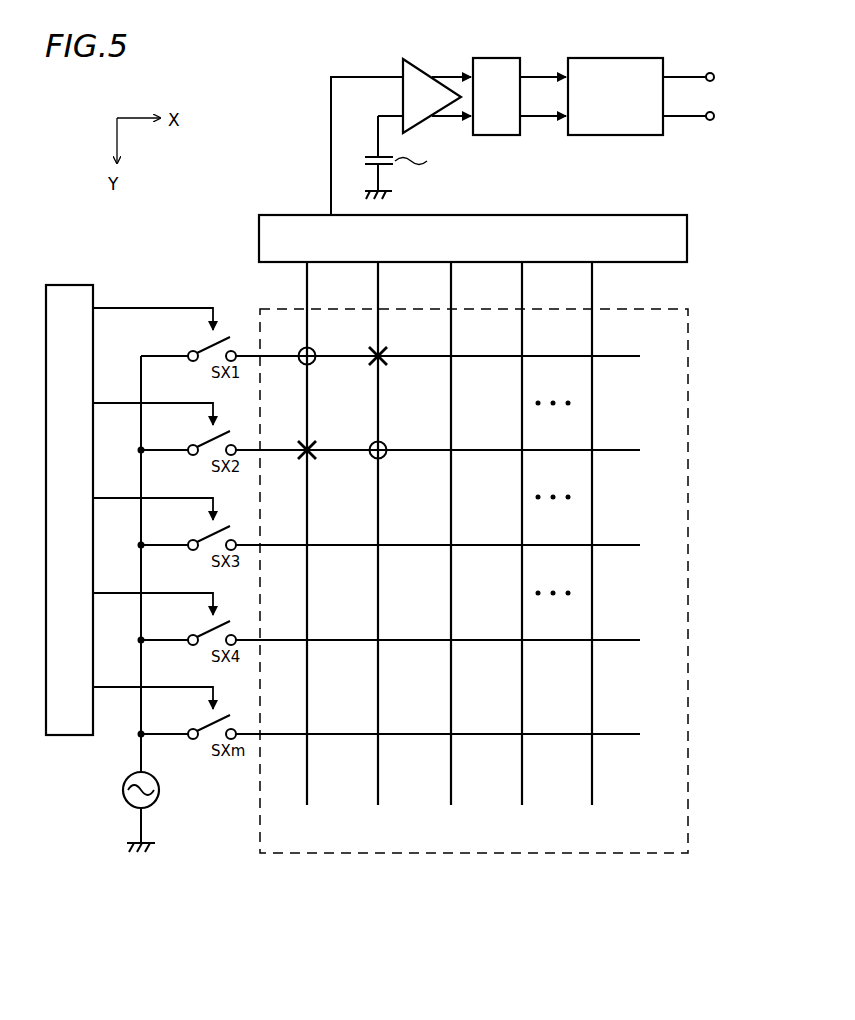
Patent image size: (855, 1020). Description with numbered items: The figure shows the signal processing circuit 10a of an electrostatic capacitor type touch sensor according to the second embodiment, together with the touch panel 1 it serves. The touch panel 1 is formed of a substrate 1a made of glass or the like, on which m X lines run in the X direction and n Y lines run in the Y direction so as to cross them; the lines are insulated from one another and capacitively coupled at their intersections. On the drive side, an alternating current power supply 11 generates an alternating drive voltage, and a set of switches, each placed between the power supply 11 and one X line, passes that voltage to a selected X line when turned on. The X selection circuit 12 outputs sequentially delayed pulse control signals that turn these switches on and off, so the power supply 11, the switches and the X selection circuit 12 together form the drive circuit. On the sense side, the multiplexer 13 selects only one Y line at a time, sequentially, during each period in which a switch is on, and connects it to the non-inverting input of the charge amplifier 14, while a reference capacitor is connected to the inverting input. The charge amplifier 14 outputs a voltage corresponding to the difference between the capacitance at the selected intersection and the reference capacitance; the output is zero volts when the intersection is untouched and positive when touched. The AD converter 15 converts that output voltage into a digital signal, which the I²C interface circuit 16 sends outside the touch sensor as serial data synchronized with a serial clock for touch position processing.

The touch panel 1 is at (708, 352).
The substrate 1a is at (690, 401).
The signal processing circuit 10a is at (272, 58).
The alternating current power supply 11 is at (161, 797).
The X selection circuit 12 is at (76, 290).
The multiplexer 13 is at (687, 240).
The charge amplifier 14 is at (416, 58).
The AD converter 15 is at (502, 58).
The I²C interface circuit 16 is at (627, 58).